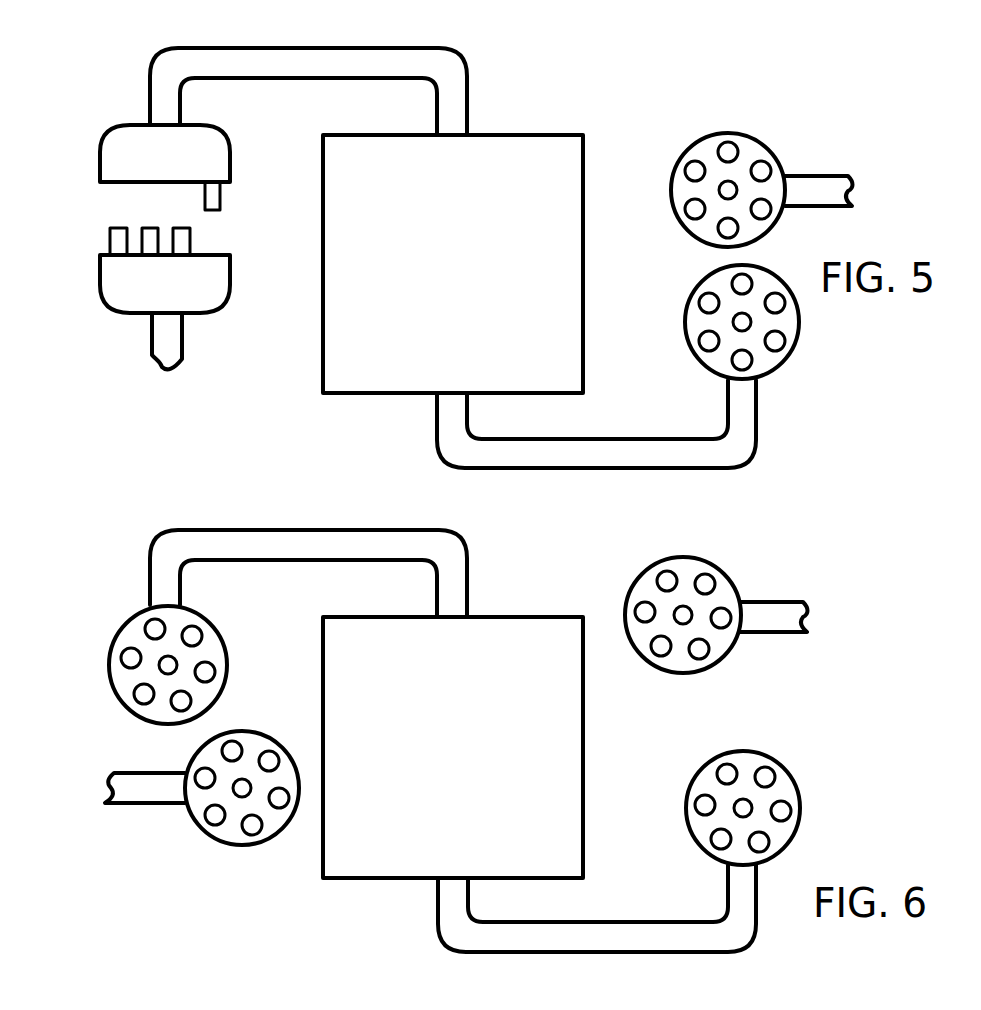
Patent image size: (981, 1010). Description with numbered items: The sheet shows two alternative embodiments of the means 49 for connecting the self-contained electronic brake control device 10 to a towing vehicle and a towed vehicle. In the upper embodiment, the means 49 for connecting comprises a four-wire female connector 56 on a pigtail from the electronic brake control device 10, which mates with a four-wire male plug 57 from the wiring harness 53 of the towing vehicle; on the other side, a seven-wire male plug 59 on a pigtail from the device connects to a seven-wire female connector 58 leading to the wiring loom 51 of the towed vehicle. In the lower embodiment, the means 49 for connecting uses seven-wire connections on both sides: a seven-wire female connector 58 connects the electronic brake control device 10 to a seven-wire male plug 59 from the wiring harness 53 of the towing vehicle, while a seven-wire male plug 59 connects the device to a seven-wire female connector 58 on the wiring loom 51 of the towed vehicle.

In FIG. 5, the electronic brake control device 10 is at (440, 213).
In FIG. 6, the electronic brake control device 10 is at (440, 710).
In FIG. 5, the means for connecting 49 is at (124, 66).
In FIG. 6, the means for connecting 49 is at (110, 535).
In FIG. 5, the wiring loom 51 is at (826, 190).
In FIG. 6, the wiring loom 51 is at (805, 615).
In FIG. 5, the wiring harness 53 is at (164, 351).
In FIG. 6, the wiring harness 53 is at (149, 795).
In FIG. 5, the 4 wire female connector 56 is at (120, 143).
In FIG. 5, the 4 wire male plug 57 is at (121, 301).
In FIG. 5, the 7 wire female connector 58 is at (678, 195).
In FIG. 6, the 7 wire female connector 58 is at (212, 647).
In FIG. 5, the 7 wire male plug 59 is at (778, 359).
In FIG. 6, the 7 wire male plug 59 is at (272, 828).